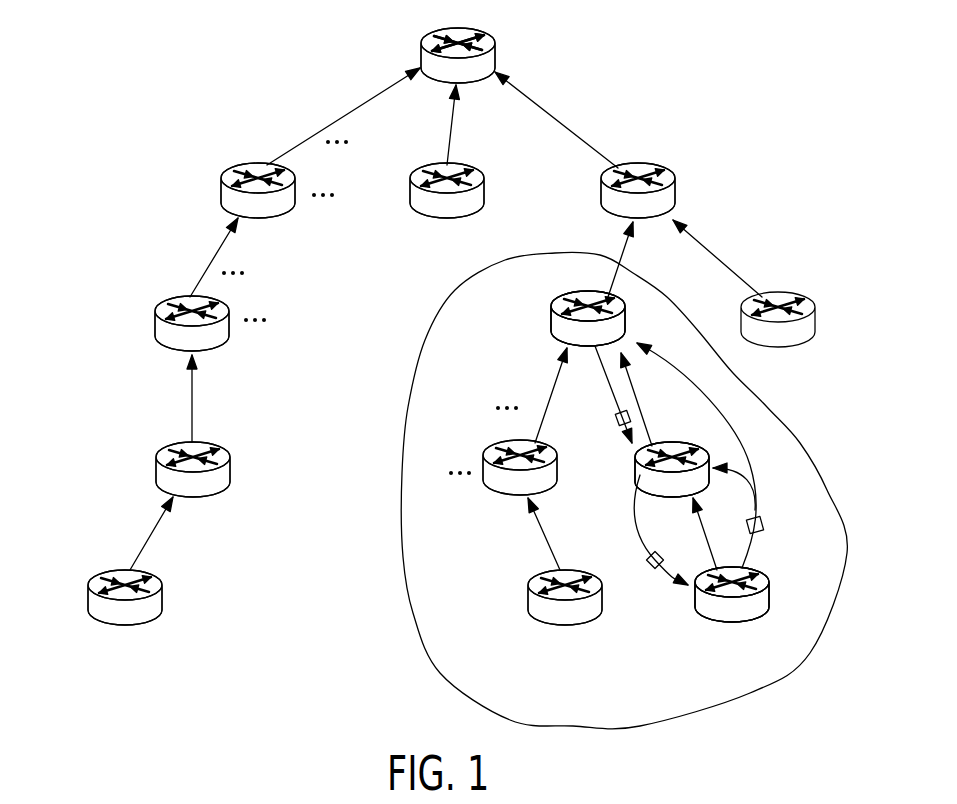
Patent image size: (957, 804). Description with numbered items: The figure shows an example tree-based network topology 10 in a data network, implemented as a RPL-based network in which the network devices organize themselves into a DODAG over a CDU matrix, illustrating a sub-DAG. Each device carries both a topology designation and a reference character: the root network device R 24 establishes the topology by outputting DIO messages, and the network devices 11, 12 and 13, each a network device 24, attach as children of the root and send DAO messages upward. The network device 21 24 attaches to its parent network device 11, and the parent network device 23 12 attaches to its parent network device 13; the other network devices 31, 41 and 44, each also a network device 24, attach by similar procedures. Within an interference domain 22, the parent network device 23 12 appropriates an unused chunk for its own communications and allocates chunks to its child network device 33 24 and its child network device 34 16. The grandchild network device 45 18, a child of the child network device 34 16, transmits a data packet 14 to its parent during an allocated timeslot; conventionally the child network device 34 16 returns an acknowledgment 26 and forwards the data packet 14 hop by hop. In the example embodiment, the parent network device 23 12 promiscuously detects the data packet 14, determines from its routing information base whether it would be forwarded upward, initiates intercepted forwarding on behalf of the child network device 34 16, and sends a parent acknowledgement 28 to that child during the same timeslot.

The root network device R is at (458, 41).
The tree-based network topology 10 is at (638, 110).
The first-hop child network device of the root 11 is at (258, 208).
The parent network device 12 is at (552, 322).
The first-hop child network device of the root 13 is at (638, 213).
The data packet 14 is at (764, 527).
The child network device 16 is at (636, 470).
The grandchild network device 18 is at (770, 592).
The network device 21 is at (190, 341).
The interference domain 22 is at (807, 437).
The parent network device 23 is at (588, 303).
The network device 24 is at (421, 62).
The acknowledgment 26 is at (651, 569).
The parent acknowledgement 28 is at (617, 415).
The network device 31 is at (193, 487).
The child network device 33 is at (520, 484).
The child network device 34 is at (672, 486).
The network device 41 is at (125, 615).
The network device 44 is at (565, 615).
The grandchild network device 45 is at (732, 611).